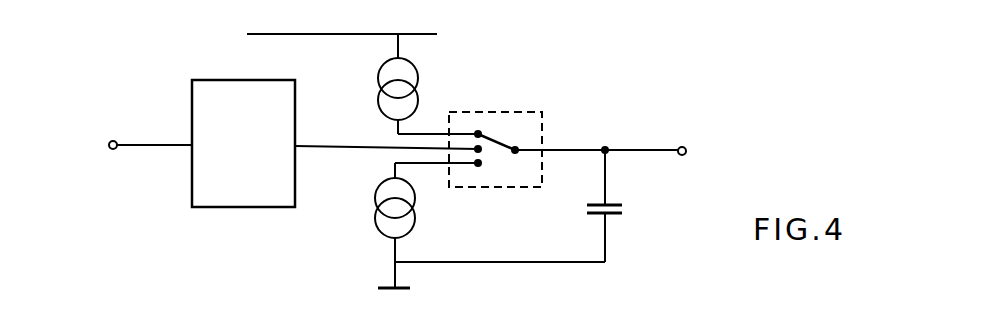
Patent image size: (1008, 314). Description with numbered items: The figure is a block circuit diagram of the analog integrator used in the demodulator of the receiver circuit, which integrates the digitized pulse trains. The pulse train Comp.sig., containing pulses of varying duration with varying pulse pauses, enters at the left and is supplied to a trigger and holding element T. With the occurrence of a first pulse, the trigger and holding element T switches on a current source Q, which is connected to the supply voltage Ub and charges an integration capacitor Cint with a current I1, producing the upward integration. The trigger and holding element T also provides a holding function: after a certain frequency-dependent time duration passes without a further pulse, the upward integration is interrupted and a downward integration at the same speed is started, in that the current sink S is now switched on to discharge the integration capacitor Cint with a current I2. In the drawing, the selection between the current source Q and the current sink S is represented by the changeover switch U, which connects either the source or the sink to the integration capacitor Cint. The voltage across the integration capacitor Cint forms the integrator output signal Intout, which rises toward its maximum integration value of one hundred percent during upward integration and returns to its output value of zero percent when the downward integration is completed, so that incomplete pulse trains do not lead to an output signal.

The trigger and holding element T is at (240, 210).
The current source Q is at (418, 86).
The current sink S is at (415, 208).
The changeover switch U is at (537, 112).
The integration capacitor Cint is at (612, 201).
The current I1 is at (363, 62).
The current I2 is at (362, 178).
The supply voltage Ub is at (443, 21).
The pulse train Comp.sig. is at (106, 144).
The integrator output signal Intout is at (684, 146).